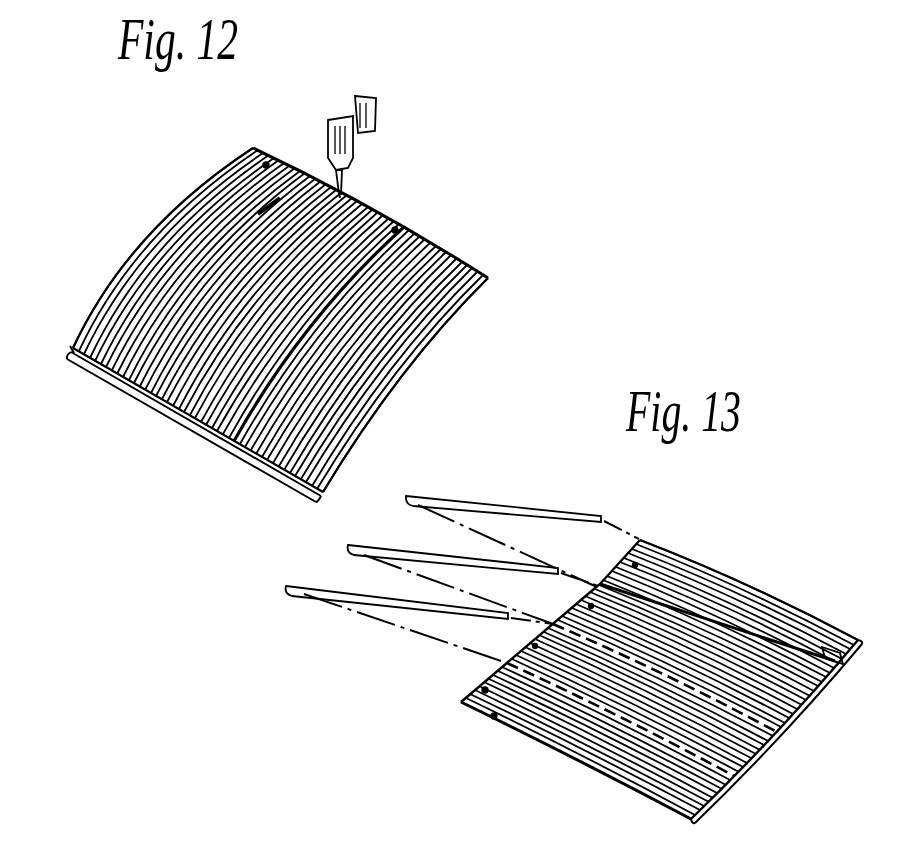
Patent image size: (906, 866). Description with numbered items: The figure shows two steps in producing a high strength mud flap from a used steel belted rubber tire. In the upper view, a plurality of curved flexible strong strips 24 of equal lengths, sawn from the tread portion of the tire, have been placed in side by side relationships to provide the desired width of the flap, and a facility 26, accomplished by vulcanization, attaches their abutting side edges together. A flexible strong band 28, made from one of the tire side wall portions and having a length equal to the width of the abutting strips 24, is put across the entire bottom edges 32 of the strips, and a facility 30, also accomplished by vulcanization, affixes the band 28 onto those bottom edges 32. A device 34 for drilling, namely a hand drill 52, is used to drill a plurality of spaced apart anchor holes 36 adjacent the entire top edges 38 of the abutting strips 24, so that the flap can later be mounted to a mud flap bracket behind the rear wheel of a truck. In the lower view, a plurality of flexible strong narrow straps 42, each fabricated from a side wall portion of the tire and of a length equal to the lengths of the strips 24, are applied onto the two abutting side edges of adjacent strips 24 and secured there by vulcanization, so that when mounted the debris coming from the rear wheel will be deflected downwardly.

In FIG. 12, the curved flexible strong strips 24 is at (127, 240).
In FIG. 13, the curved flexible strong strips 24 is at (734, 564).
In FIG. 12, the facility for attaching abutting side edges 26 is at (401, 239).
In FIG. 13, the facility for attaching abutting side edges 26 is at (652, 597).
In FIG. 12, the flexible strong band 28 is at (161, 402).
In FIG. 13, the flexible strong band 28 is at (752, 743).
In FIG. 13, the facility for affixing the flexible strong band 30 is at (824, 645).
In FIG. 12, the bottom edges 32 is at (70, 340).
In FIG. 12, the device for drilling anchor holes 34 is at (313, 129).
In FIG. 12, the anchor holes 36 is at (258, 152).
In FIG. 13, the anchor holes 36 is at (485, 705).
In FIG. 12, the top edges 38 is at (385, 220).
In FIG. 13, the top edges 38 is at (460, 688).
In FIG. 13, the flexible strong narrow straps 42 is at (541, 500).
In FIG. 12, the hand drill 52 is at (326, 96).